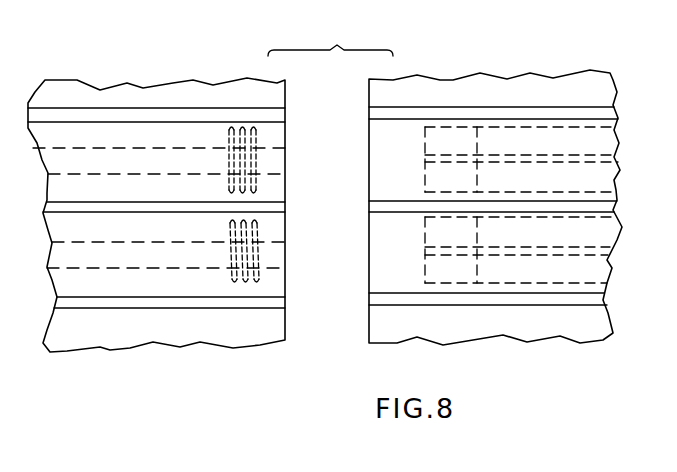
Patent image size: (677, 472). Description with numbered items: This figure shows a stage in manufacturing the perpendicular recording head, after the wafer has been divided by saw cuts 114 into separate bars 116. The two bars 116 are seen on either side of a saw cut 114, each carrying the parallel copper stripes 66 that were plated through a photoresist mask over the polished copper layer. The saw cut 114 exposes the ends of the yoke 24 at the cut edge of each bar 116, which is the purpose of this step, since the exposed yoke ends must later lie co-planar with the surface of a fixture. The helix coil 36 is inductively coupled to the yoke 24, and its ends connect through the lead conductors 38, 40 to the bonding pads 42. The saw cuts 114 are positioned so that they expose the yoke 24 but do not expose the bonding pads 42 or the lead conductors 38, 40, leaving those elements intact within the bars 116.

The yoke 24 is at (152, 148).
The helix coil 36 is at (230, 131).
The lead conductor 38 is at (607, 160).
The lead conductor 40 is at (590, 125).
The bonding pads 42 is at (425, 140).
The parallel copper stripes 66 is at (369, 112).
The saw cuts 114 is at (337, 346).
The bars 116 is at (262, 336).